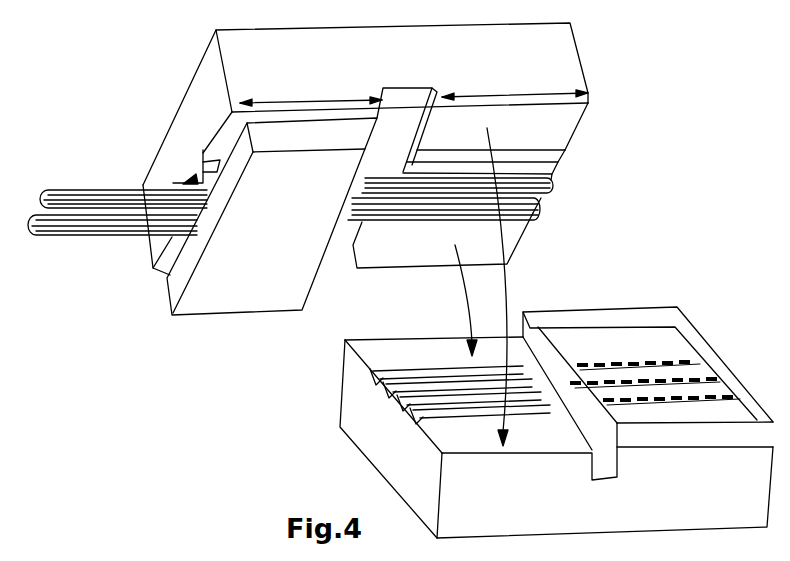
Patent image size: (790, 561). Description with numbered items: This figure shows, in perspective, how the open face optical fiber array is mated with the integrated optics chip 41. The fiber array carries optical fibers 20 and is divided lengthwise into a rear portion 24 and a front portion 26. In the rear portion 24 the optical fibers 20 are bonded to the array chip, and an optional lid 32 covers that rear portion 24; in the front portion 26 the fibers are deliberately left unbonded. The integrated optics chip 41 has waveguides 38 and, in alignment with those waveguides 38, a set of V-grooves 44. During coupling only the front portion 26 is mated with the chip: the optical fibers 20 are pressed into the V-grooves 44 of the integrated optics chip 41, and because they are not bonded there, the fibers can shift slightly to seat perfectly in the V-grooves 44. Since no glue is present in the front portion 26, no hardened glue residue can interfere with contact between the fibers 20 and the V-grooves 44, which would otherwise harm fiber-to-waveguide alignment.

The optical fibers 20 is at (550, 195).
The rear portion 24 is at (312, 97).
The front portion 26 is at (512, 92).
The lid 32 is at (287, 266).
The waveguides 38 is at (690, 358).
The integrated optics chip 41 is at (696, 313).
The V-grooves 44 is at (398, 383).